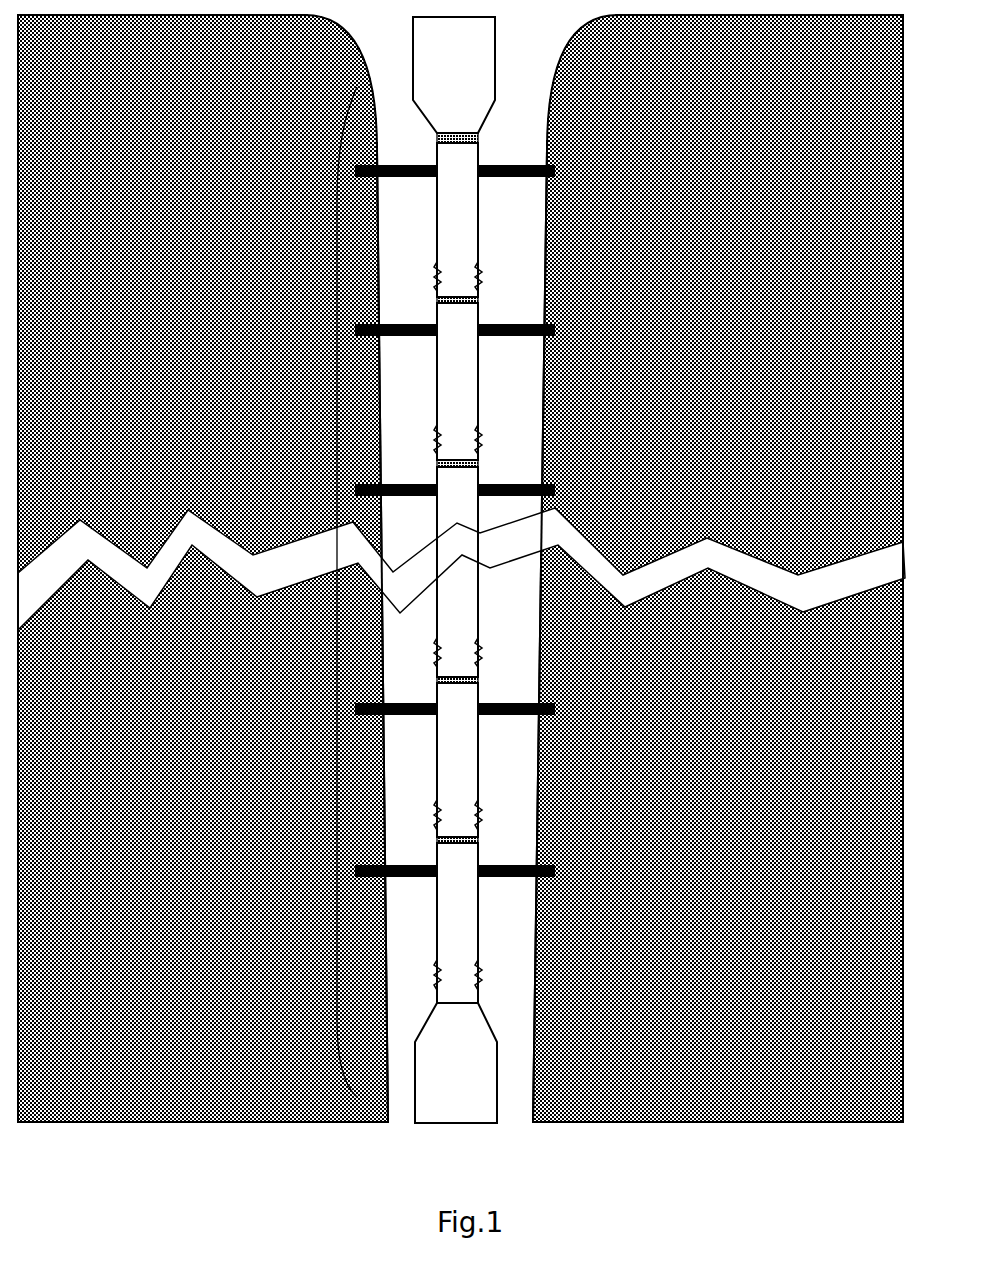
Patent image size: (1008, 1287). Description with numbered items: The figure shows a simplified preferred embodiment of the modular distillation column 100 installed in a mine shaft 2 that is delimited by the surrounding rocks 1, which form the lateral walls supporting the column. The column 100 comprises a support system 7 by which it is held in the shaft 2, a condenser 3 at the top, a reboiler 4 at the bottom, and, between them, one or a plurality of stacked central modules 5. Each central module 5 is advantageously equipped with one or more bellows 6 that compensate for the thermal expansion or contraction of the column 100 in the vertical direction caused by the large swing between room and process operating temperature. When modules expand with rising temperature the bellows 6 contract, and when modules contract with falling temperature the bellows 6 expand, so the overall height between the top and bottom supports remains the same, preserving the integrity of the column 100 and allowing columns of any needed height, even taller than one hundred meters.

The surrounding rocks 1 is at (382, 212).
The mine shaft 2 is at (517, 108).
The condenser 3 is at (454, 75).
The reboiler 4 is at (456, 1063).
The central modules 5 is at (463, 908).
The bellows 6 is at (444, 277).
The support system 7 is at (512, 158).
The modular distillation column 100 is at (337, 373).